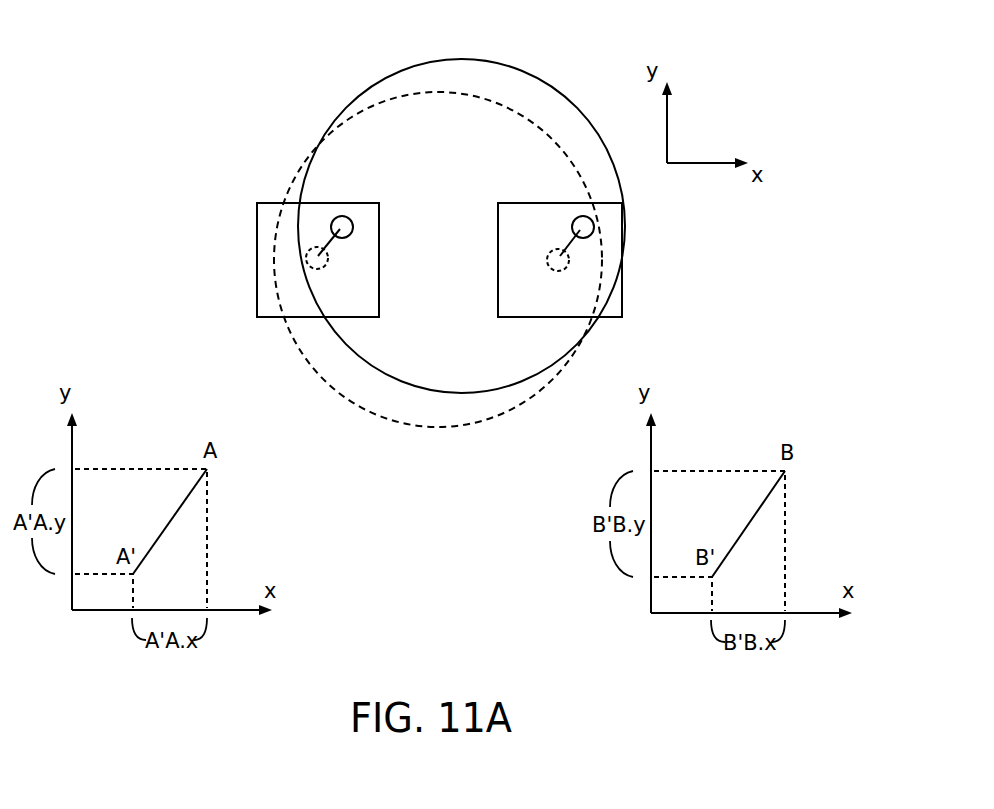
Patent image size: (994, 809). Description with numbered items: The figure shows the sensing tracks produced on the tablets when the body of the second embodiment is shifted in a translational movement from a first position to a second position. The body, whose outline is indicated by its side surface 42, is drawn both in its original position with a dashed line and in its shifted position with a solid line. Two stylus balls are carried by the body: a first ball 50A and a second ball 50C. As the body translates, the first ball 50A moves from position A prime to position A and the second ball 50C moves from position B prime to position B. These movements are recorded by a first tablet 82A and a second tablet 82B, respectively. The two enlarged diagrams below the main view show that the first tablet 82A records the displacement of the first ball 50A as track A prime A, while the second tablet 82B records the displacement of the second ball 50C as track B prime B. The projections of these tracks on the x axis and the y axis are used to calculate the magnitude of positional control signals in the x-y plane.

The side surface 42 is at (348, 350).
The first tablet 82A is at (257, 302).
The second tablet 82B is at (622, 303).
The first ball 50A is at (331, 226).
The second ball 50C is at (569, 258).